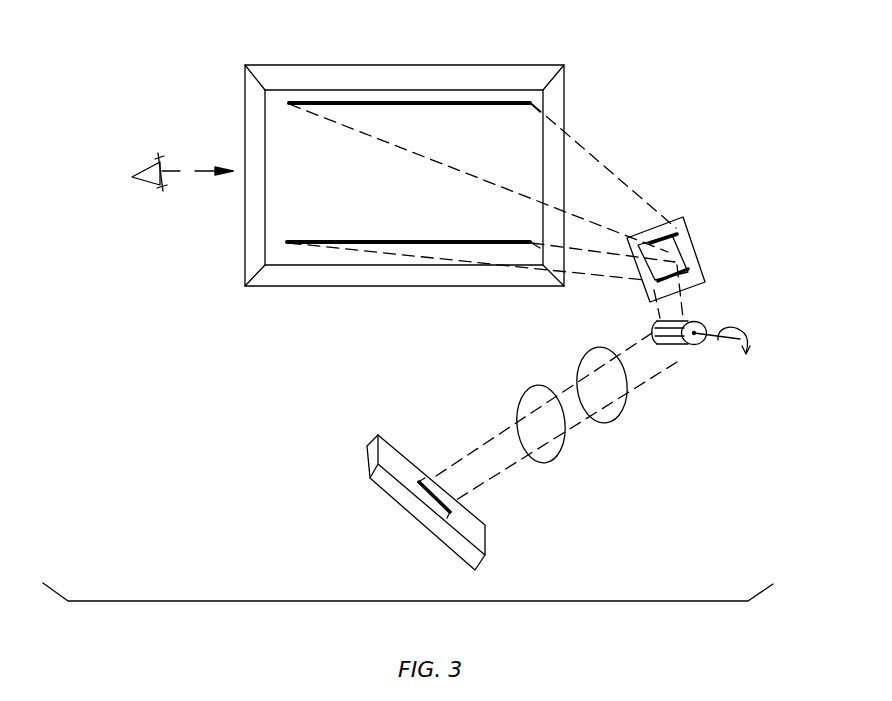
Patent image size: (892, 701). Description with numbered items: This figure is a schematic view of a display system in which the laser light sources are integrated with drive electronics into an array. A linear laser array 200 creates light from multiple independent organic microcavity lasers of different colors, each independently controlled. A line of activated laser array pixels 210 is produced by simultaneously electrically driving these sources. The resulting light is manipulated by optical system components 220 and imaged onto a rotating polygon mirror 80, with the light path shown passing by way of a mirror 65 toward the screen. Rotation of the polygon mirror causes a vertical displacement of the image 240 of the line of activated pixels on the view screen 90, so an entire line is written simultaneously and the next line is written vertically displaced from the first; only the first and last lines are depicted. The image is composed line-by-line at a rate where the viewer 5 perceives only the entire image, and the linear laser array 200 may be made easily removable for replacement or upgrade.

The viewer 5 is at (147, 168).
The view screen 90 is at (431, 65).
The image of the line of activated laser array pixels 240 is at (378, 104).
The mirror 65 is at (700, 247).
The rotating polygon mirror 80 is at (702, 318).
The optical system components 220 is at (593, 360).
The linear laser array 200 is at (367, 453).
The line of activated laser array pixels 210 is at (431, 490).